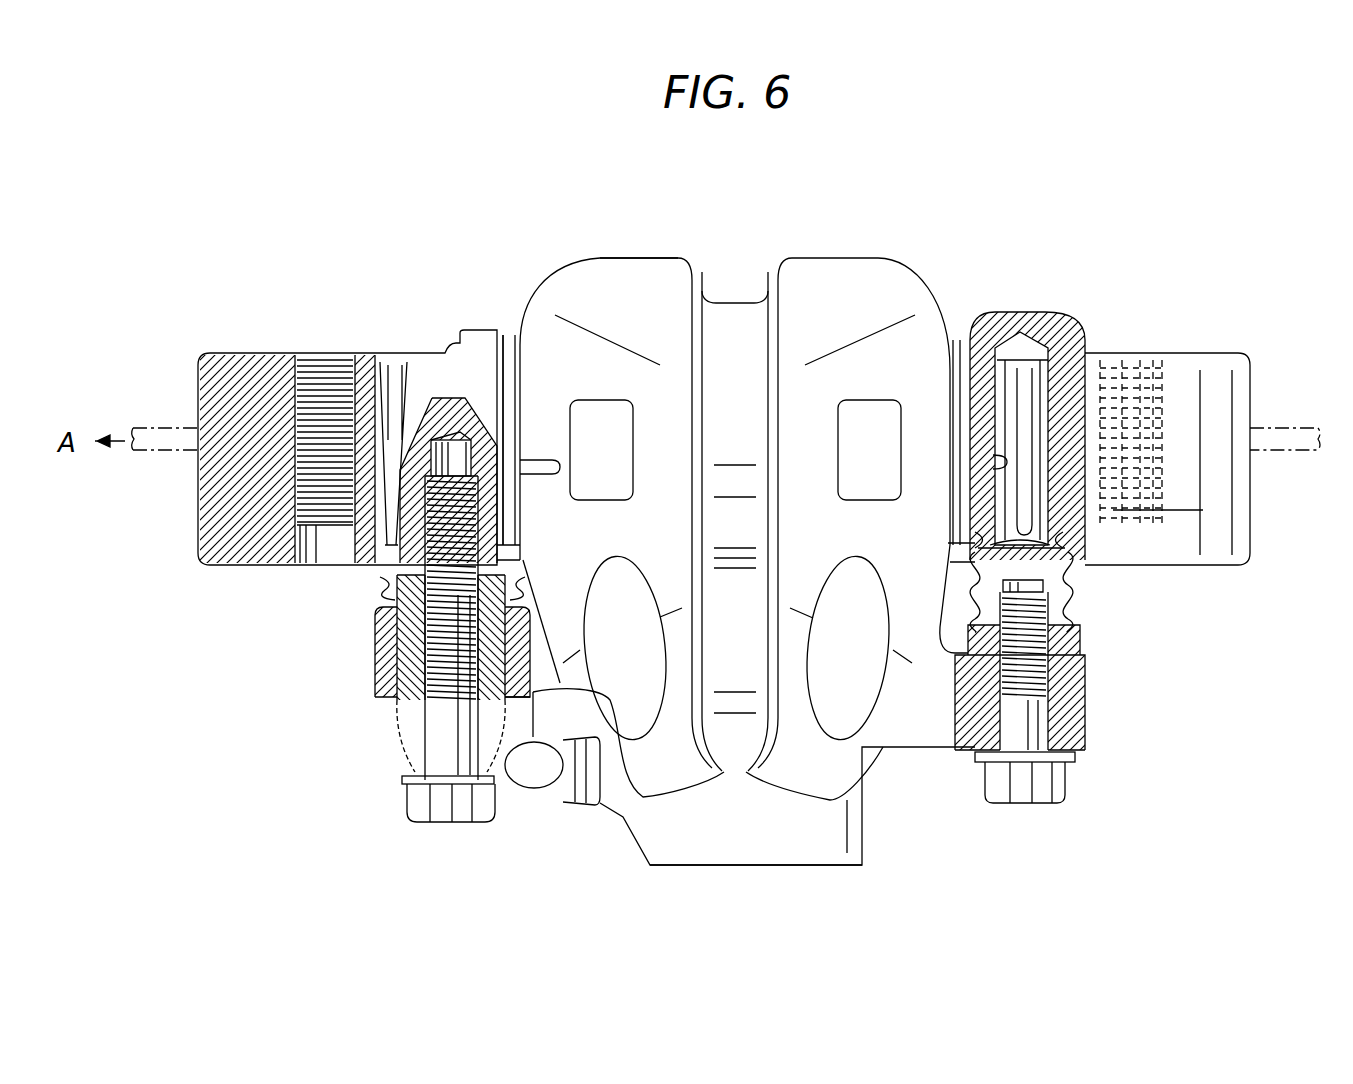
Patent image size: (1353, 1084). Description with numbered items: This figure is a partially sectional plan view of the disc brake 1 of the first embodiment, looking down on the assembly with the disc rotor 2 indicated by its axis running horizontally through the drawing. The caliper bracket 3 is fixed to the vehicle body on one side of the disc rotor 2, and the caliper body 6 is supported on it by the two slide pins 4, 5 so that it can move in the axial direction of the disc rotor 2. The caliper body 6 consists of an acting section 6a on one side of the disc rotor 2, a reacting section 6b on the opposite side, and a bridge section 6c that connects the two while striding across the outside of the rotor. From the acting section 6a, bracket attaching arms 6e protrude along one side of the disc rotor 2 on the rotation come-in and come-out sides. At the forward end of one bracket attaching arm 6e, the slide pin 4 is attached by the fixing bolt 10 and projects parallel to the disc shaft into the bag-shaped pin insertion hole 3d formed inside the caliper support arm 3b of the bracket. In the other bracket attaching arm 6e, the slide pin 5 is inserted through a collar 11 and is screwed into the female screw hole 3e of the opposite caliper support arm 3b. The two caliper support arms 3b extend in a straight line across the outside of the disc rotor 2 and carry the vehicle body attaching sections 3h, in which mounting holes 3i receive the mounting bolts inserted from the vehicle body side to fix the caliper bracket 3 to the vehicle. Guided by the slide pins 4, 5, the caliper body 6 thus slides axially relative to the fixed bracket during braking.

The disc brake 1 is at (965, 195).
The disc rotor 2 is at (1285, 465).
The caliper bracket 3 is at (1190, 338).
The caliper support arm 3b is at (428, 365).
The pin insertion hole 3d is at (992, 462).
The female screw hole 3e is at (468, 505).
The vehicle body attaching section 3h is at (246, 358).
The mounting hole 3i is at (332, 372).
The slide pin 4 is at (1020, 385).
The slide pin 5 is at (415, 800).
The caliper body 6 is at (845, 240).
The acting section 6a is at (742, 847).
The reacting section 6b is at (646, 268).
The bridge section 6c is at (538, 422).
The bracket attaching arm 6e is at (383, 662).
The fixing bolt 10 is at (1035, 800).
The collar 11 is at (395, 630).